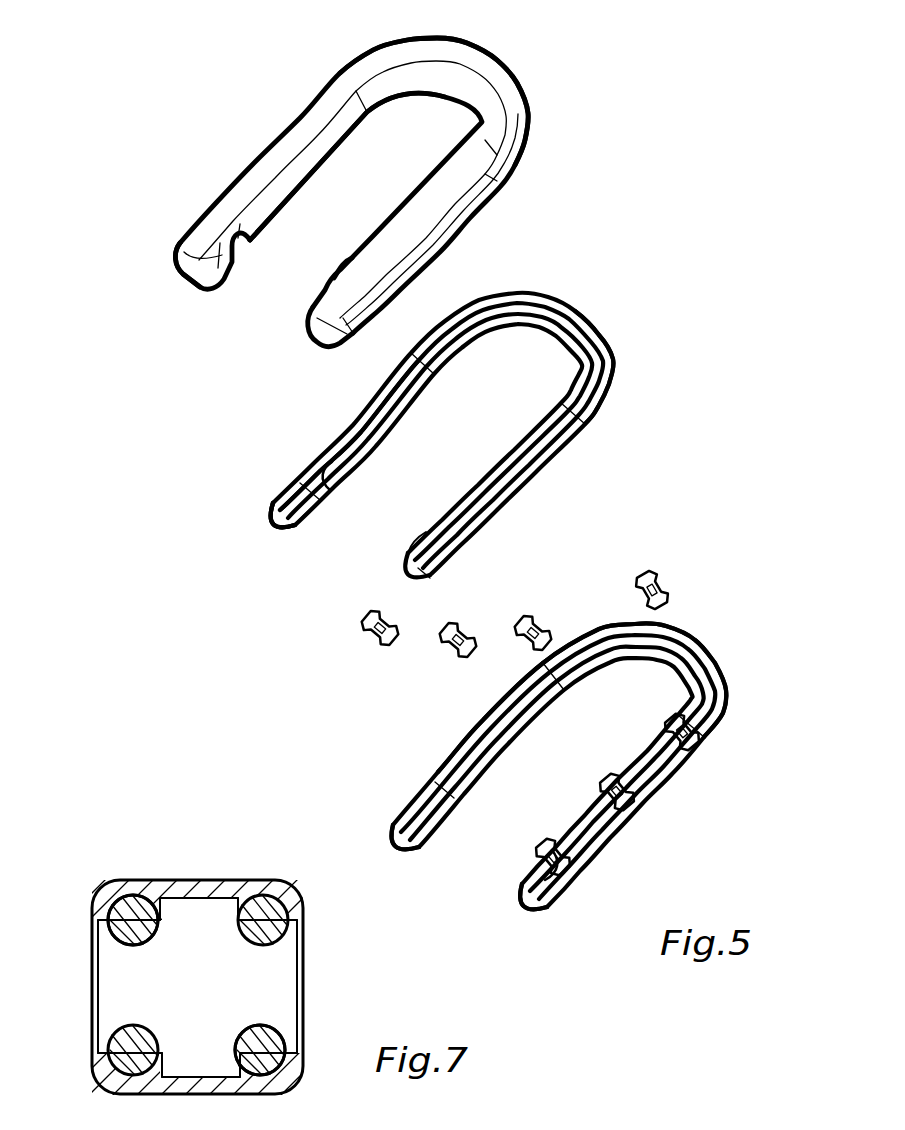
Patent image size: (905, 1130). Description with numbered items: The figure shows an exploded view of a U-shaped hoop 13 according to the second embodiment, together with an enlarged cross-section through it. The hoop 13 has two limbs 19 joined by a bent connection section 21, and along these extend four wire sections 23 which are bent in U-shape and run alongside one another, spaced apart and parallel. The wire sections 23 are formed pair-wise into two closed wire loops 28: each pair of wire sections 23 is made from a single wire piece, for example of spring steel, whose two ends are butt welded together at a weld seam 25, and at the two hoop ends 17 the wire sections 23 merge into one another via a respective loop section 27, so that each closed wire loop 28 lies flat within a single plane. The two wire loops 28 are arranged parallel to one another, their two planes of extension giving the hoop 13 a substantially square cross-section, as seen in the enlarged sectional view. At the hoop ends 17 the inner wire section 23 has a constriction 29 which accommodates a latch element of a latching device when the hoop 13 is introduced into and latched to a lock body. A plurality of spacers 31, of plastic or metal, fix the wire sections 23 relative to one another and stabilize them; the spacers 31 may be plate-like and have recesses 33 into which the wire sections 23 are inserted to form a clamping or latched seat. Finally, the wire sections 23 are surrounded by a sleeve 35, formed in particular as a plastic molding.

In FIG. 5, the hoop 13 is at (688, 126).
In FIG. 5, the hoop end 17 is at (170, 250).
In FIG. 5, the limb 19 is at (256, 160).
In FIG. 5, the connection section 21 is at (494, 58).
In FIG. 5, the wire section 23 is at (350, 430).
In FIG. 7, the wire section 23 is at (118, 910).
In FIG. 5, the weld seam 25 is at (353, 450).
In FIG. 5, the loop section 27 is at (277, 521).
In FIG. 5, the closed wire loop 28 is at (574, 430).
In FIG. 5, the constriction 29 is at (425, 528).
In FIG. 5, the spacer 31 is at (532, 620).
In FIG. 7, the spacer 31 is at (183, 918).
In FIG. 5, the recess 33 is at (668, 596).
In FIG. 7, the recess 33 is at (148, 936).
In FIG. 5, the sleeve 35 is at (452, 180).
In FIG. 7, the sleeve 35 is at (222, 890).